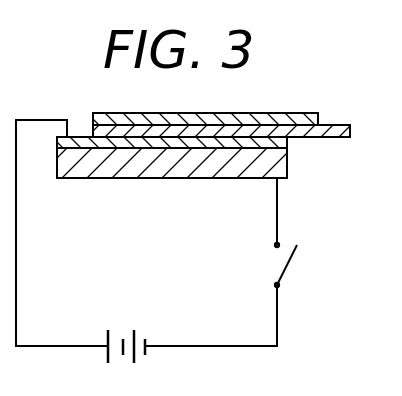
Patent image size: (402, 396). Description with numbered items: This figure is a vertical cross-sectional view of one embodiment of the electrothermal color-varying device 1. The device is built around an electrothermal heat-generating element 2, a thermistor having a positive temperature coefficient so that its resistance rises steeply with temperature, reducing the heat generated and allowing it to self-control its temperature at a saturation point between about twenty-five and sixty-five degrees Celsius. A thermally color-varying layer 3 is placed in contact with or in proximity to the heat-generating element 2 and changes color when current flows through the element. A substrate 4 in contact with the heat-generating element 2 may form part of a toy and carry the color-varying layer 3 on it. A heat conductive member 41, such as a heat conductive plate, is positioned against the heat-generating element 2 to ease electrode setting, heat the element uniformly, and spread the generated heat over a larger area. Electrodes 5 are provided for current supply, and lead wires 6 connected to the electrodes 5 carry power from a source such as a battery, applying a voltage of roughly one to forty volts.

The electrothermal color-varying device 1 is at (270, 113).
The electrothermal heat-generating element 2 is at (286, 162).
The thermally color-varying layer 3 is at (237, 124).
The substrate 4 is at (342, 125).
The heat conductive member 41 is at (289, 140).
The electrodes 5 is at (72, 131).
The lead wires 6 is at (237, 346).